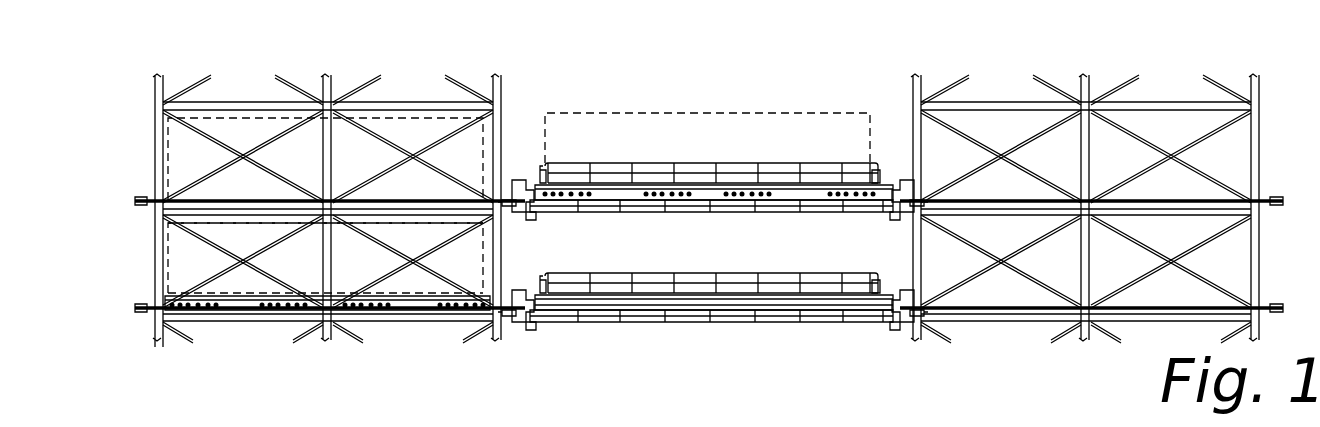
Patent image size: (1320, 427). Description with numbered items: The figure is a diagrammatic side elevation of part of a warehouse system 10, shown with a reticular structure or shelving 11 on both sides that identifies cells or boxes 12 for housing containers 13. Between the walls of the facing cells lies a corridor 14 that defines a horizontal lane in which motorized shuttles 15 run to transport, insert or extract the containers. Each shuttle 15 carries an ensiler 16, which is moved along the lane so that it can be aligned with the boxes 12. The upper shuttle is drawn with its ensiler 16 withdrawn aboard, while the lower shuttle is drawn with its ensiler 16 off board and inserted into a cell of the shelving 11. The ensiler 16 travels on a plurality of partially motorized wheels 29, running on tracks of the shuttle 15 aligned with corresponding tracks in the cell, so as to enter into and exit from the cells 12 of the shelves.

The warehouse system 10 is at (440, 48).
The reticular structure or shelving 11 is at (160, 340).
The cells or boxes 12 is at (176, 152).
The containers 13 is at (262, 118).
The corridors 14 is at (812, 84).
The motorized shuttles 15 is at (668, 222).
The ensiler 16 is at (566, 166).
The partially motorized wheels 29 is at (275, 302).